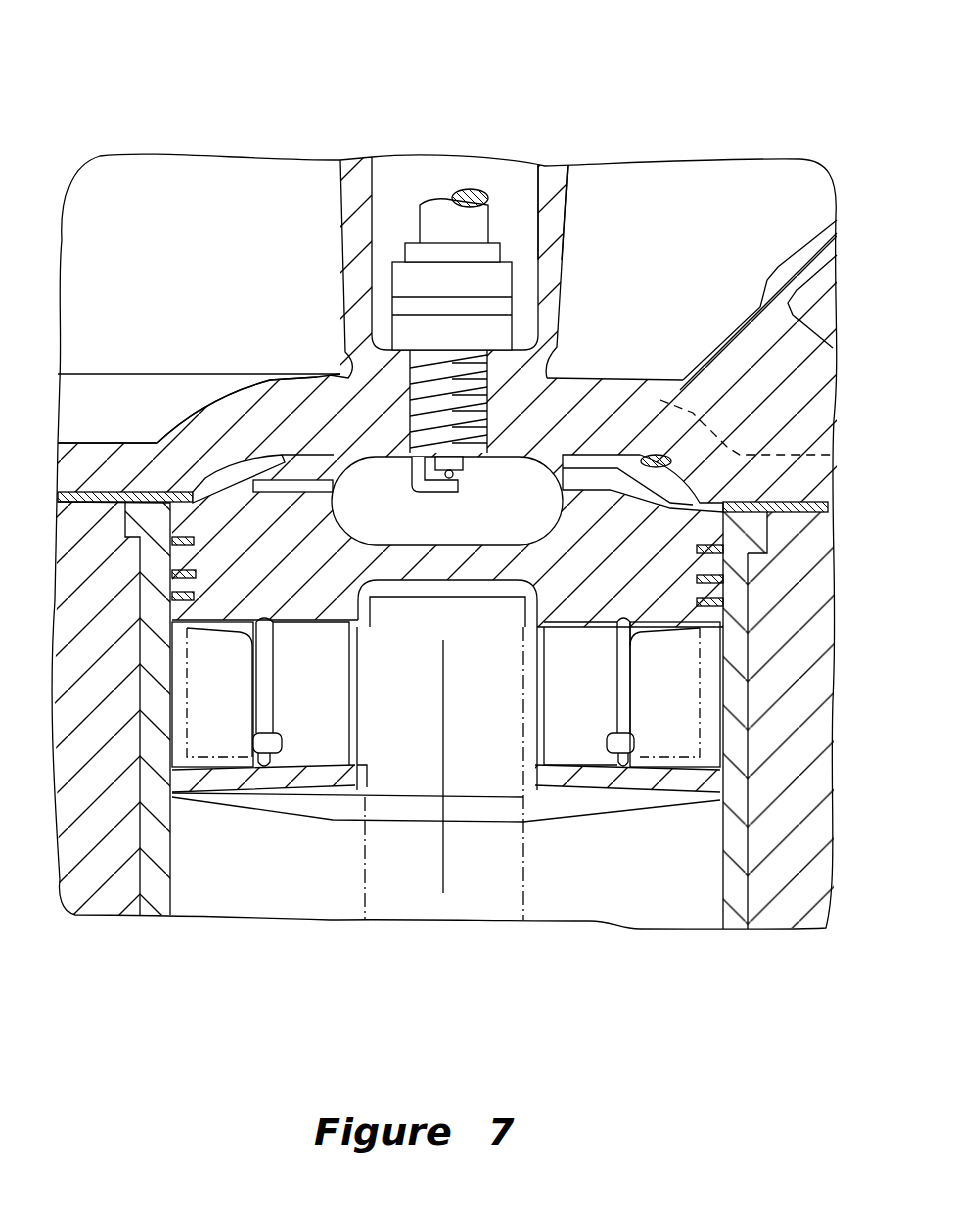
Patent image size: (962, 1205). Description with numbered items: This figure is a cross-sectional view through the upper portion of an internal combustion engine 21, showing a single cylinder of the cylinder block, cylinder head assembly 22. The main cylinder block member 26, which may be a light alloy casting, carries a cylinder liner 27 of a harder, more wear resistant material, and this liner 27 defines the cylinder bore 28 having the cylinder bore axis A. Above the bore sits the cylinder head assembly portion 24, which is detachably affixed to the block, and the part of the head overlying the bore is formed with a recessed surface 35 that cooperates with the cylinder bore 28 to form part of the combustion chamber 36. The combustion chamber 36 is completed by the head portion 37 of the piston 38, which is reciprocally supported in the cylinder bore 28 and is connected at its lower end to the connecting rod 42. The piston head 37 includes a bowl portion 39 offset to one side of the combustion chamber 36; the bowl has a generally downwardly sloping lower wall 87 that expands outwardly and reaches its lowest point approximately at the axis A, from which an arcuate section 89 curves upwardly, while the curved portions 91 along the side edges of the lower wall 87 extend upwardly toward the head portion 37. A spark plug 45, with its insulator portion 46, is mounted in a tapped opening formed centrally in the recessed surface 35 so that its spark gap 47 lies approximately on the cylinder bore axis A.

The internal combustion engine 21 is at (100, 70).
The cylinder block, cylinder head assembly 22 is at (187, 108).
The cylinder head assembly portion 24 is at (551, 185).
The main cylinder block member 26 is at (87, 872).
The cylinder liner 27 is at (150, 890).
The cylinder bore 28 is at (720, 862).
The recessed surface 35 is at (667, 460).
The combustion chamber 36 is at (243, 470).
The head portion 37 is at (245, 490).
The piston 38 is at (306, 810).
The bowl portion 39 is at (503, 497).
The connecting rod 42 is at (523, 880).
The spark plug 45 is at (417, 213).
The insulator portion 46 is at (436, 213).
The spark gap 47 is at (440, 490).
The lower wall 87 is at (472, 532).
The arcuate section 89 is at (390, 493).
The curved portions 91 is at (300, 462).
The cylinder bore axis A is at (443, 872).